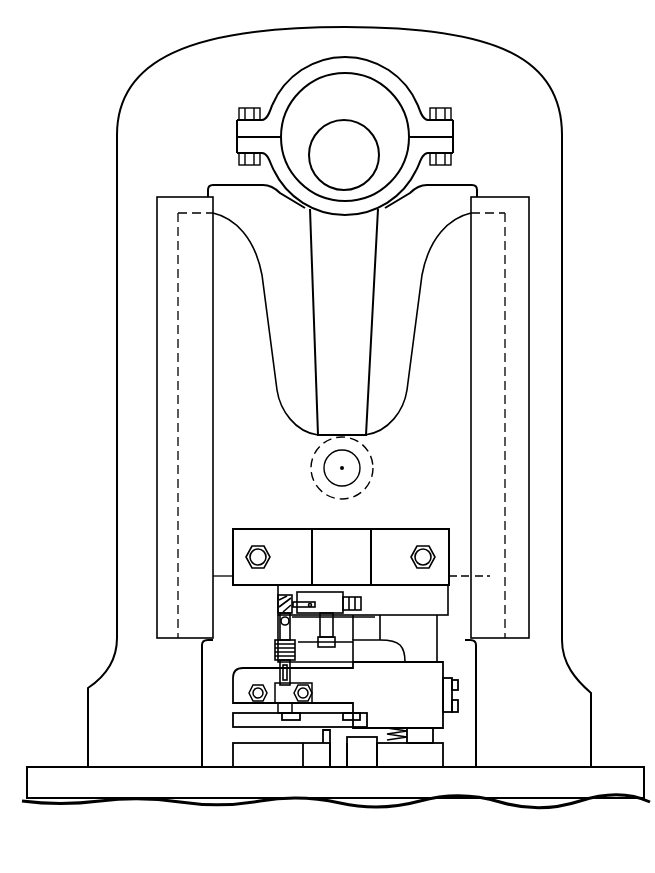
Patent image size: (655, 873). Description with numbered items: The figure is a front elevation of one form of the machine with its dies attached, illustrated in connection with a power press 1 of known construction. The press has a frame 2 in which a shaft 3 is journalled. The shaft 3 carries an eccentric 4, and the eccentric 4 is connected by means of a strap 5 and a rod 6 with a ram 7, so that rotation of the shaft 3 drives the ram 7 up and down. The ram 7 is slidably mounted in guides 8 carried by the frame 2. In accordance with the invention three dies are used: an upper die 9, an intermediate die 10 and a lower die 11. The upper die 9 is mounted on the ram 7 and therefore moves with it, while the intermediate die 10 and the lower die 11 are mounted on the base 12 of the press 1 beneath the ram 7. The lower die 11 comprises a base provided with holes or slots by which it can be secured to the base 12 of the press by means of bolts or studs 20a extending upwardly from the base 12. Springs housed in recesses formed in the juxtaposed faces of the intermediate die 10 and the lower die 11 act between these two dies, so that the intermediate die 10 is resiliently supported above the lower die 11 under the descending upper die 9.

The press 1 is at (108, 107).
The frame 2 is at (537, 107).
The shaft 3 is at (330, 172).
The eccentric 4 is at (380, 117).
The strap 5 is at (303, 77).
The rod 6 is at (360, 308).
The ram 7 is at (414, 391).
The guides 8 is at (187, 434).
The upper die 9 is at (427, 648).
The intermediate die 10 is at (425, 708).
The lower die 11 is at (430, 758).
The base 12 is at (617, 777).
The bolts or studs 20a is at (338, 762).